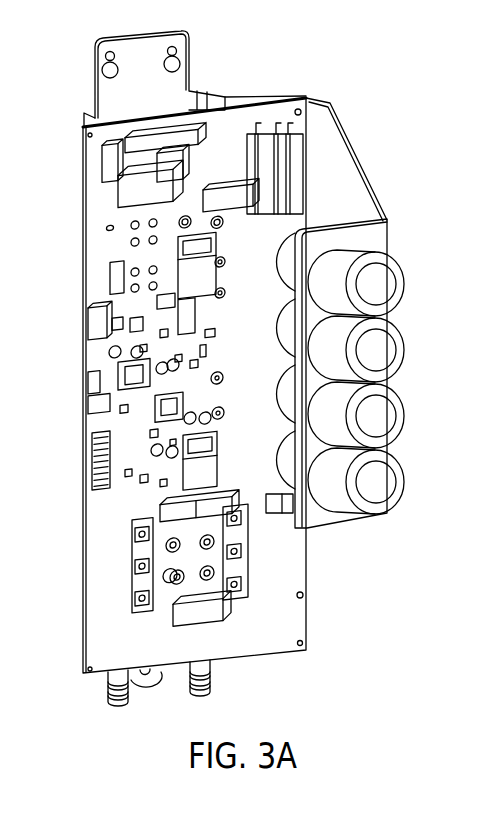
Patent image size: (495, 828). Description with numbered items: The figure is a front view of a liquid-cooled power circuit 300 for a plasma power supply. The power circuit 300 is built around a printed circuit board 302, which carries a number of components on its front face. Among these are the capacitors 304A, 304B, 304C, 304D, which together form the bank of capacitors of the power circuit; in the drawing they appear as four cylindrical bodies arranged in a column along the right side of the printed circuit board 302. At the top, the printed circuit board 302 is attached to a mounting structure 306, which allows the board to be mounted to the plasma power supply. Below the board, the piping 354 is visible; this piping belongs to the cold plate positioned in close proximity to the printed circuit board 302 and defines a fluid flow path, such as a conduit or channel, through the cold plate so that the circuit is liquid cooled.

The liquid-cooled power circuit 300 is at (351, 71).
The printed circuit board 302 is at (97, 203).
The capacitor 304A is at (382, 283).
The capacitor 304B is at (382, 350).
The capacitor 304C is at (382, 416).
The capacitor 304D is at (382, 482).
The mounting structure 306 is at (120, 42).
The piping 354 is at (212, 683).